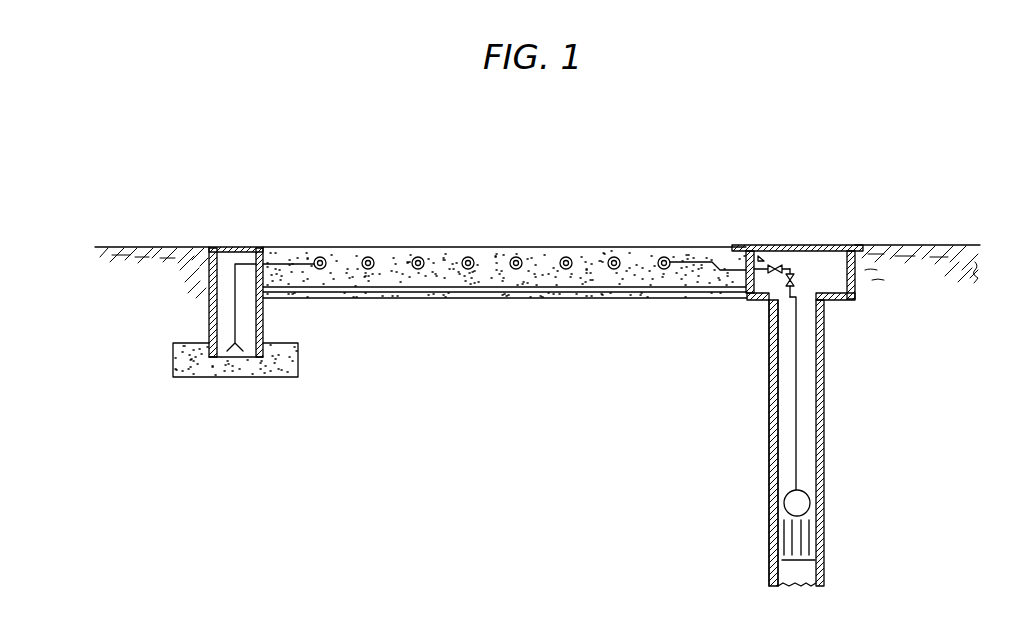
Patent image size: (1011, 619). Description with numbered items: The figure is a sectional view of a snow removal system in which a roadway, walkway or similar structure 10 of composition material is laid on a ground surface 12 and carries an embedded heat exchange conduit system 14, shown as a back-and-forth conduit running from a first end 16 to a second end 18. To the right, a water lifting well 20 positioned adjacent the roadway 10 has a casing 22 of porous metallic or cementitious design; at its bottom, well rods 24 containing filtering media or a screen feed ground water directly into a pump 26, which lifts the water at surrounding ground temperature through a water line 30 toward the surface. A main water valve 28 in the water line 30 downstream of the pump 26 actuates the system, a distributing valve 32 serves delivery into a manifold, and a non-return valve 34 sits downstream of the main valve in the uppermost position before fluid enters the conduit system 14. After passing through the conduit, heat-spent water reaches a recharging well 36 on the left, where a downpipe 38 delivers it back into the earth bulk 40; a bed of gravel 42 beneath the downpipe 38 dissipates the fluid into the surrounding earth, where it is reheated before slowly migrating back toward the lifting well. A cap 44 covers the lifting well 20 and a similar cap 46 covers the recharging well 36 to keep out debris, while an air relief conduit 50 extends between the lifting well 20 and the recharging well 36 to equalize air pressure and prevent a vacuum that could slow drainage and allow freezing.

The roadway structure 10 is at (330, 245).
The ground surface 12 is at (112, 245).
The heat exchange conduit system 14 is at (417, 257).
The first end of conduit 16 is at (668, 258).
The second end of conduit 18 is at (315, 258).
The water lifting well 20 is at (824, 400).
The casing 22 is at (771, 448).
The well rods 24 is at (808, 533).
The pump 26 is at (812, 496).
The main water valve 28 is at (803, 277).
The water line 30 is at (796, 340).
The distributing valve 32 is at (780, 270).
The non-return valve 34 is at (762, 257).
The recharging well 36 is at (208, 313).
The downpipe 38 is at (237, 307).
The earth bulk 40 is at (525, 451).
The bed of gravel 42 is at (265, 363).
The cap 44 is at (837, 244).
The cap 46 is at (222, 247).
The air relief conduit 50 is at (473, 290).